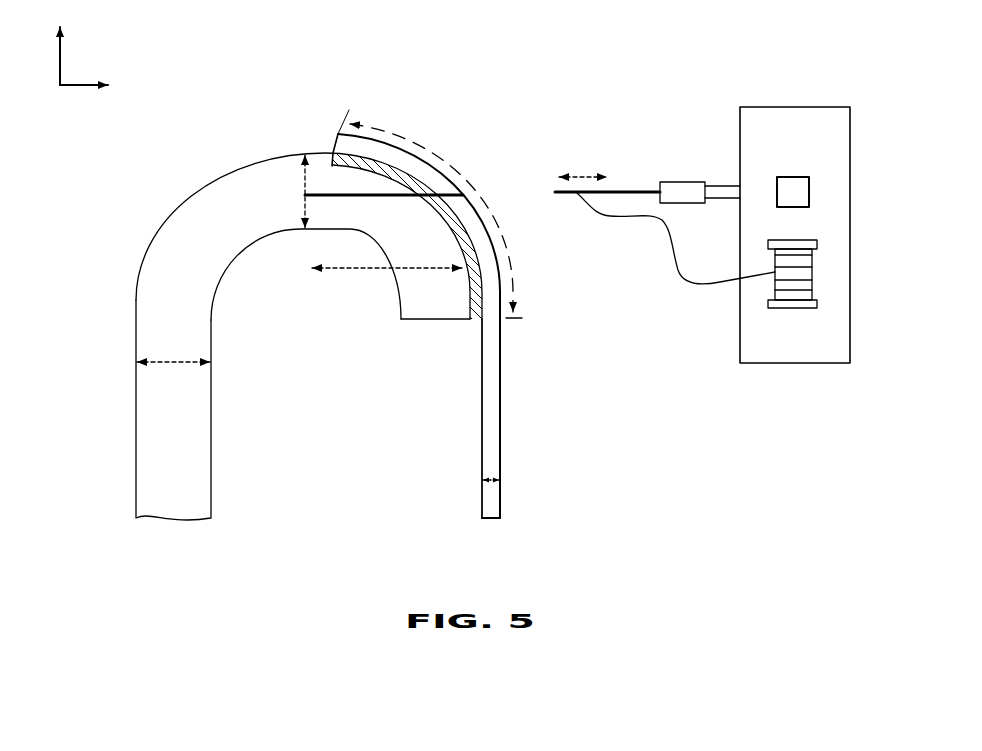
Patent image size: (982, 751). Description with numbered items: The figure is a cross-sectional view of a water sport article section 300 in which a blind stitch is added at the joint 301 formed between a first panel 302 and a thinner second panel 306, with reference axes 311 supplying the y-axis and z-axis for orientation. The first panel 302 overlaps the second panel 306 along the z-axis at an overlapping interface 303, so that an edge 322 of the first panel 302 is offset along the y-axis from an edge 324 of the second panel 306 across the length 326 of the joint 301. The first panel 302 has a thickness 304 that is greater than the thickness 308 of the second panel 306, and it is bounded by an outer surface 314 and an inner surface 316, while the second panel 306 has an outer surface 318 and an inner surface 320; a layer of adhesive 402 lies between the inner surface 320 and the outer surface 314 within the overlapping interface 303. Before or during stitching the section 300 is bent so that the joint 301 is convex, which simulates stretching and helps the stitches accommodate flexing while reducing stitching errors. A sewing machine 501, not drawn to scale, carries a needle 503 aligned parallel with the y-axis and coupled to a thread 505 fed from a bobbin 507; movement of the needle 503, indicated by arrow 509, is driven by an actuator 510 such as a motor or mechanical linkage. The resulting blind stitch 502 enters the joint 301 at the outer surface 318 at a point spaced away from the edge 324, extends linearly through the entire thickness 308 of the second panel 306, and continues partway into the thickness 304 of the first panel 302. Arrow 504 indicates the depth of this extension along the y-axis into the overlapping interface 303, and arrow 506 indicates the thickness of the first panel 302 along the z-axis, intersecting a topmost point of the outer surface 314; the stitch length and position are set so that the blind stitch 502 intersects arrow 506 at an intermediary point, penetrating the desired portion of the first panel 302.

The water sport article section 300 is at (490, 40).
The joint 301 is at (466, 148).
The first panel 302 is at (184, 435).
The overlapping interface 303 is at (533, 222).
The thickness of the first panel 304 is at (163, 362).
The second panel 306 is at (493, 405).
The thickness of the second panel 308 is at (486, 478).
The reference axes 311 is at (92, 40).
The outer surface of the first panel 314 is at (187, 200).
The inner surface of the first panel 316 is at (218, 288).
The outer surface of the second panel 318 is at (502, 343).
The inner surface of the second panel 320 is at (481, 422).
The edge of the first panel 322 is at (420, 322).
The edge of the second panel 324 is at (333, 147).
The length of the joint 326 is at (483, 205).
The layer of adhesive 402 is at (438, 206).
The sewing machine 501 is at (808, 203).
The blind stitch 502 is at (336, 198).
The needle 503 is at (620, 190).
The arrow indicating depth of extension 504 is at (333, 272).
The thread 505 is at (676, 255).
The arrow indicating thickness of the first panel 506 is at (301, 180).
The bobbin 507 is at (792, 308).
The arrow indicating needle movement 509 is at (575, 172).
The actuator 510 is at (790, 175).